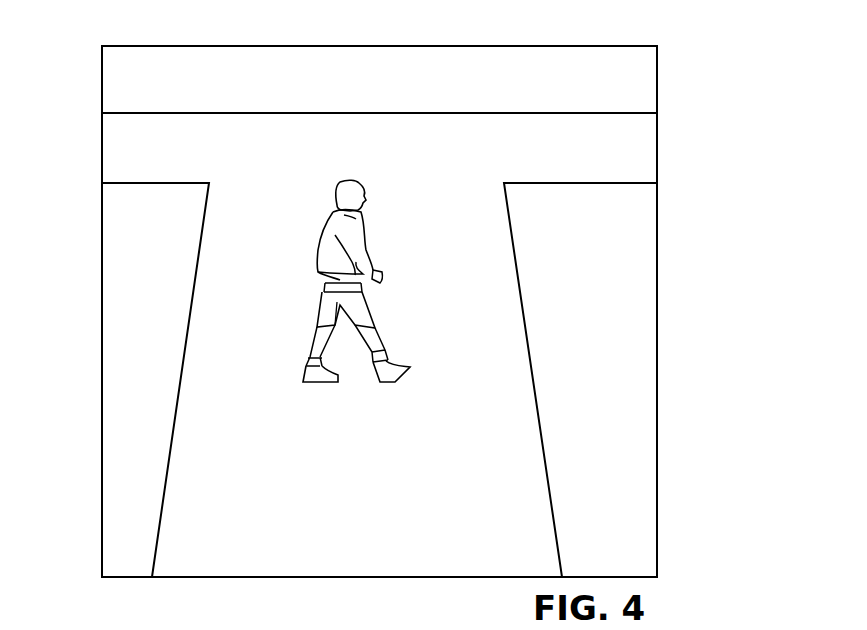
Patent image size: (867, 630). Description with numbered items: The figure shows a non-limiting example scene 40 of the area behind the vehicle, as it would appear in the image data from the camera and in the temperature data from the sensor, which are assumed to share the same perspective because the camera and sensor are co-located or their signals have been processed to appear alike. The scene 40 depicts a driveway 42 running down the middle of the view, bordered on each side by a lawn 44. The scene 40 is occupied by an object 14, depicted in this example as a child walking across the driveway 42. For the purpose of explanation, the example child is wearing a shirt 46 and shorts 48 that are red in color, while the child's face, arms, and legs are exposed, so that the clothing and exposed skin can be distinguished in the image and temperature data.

The scene 40 is at (667, 58).
The lawn 44 is at (113, 232).
The driveway 42 is at (280, 553).
The object 14 is at (353, 260).
The shirt 46 is at (330, 238).
The shorts 48 is at (323, 295).